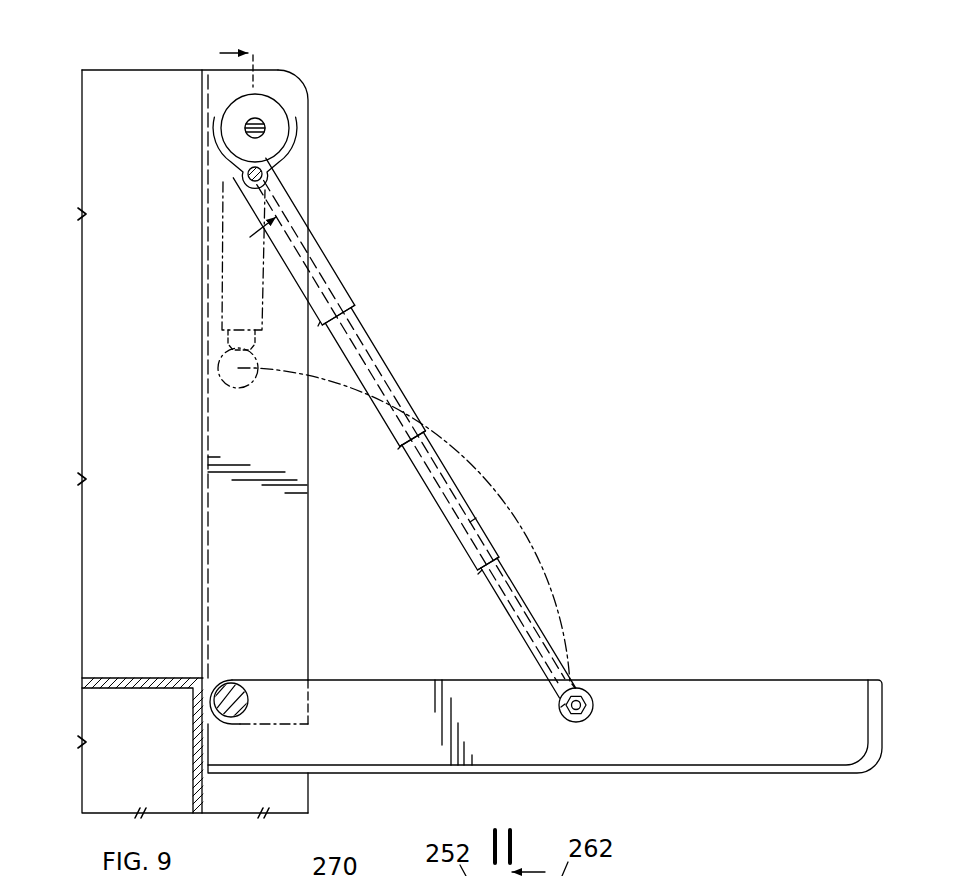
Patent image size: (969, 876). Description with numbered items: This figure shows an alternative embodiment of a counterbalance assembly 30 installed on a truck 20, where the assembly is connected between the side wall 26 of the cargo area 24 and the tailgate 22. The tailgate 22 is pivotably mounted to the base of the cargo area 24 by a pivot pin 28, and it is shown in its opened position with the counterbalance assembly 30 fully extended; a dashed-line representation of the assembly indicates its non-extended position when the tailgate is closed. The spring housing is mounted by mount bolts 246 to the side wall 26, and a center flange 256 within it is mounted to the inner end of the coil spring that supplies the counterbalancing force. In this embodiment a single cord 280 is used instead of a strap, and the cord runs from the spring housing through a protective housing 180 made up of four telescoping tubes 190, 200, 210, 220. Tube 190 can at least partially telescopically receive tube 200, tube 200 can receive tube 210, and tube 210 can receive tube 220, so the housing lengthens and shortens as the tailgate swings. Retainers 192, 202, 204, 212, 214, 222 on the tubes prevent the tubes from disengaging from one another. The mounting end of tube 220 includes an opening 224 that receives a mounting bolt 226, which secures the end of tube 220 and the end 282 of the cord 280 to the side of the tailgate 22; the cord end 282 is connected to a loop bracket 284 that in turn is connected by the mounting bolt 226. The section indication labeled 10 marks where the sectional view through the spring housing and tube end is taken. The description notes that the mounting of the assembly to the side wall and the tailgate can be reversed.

The truck 20 is at (132, 53).
The tailgate 22 is at (777, 680).
The cargo area 24 is at (93, 592).
The side wall 26 is at (273, 80).
The pivot pin 28 is at (236, 690).
The counterbalance assembly 30 is at (216, 296).
The section line 10- 10 is at (234, 155).
The protective housing 180 is at (333, 233).
The tube 190 is at (343, 270).
The retainer 192 is at (356, 307).
The tube 200 is at (401, 388).
The retainer 202 is at (357, 303).
The retainer 204 is at (401, 449).
The tube 210 is at (457, 480).
The retainer 212 is at (397, 441).
The retainer 214 is at (480, 572).
The tube 220 is at (528, 612).
The retainer 222 is at (477, 563).
The opening 224 is at (584, 701).
The mounting bolt 226 is at (589, 713).
The mount bolts 246 is at (246, 175).
The center flange 256 is at (263, 123).
The cord 280 is at (477, 517).
The end of cord 282 is at (575, 672).
The loop bracket 284 is at (562, 706).